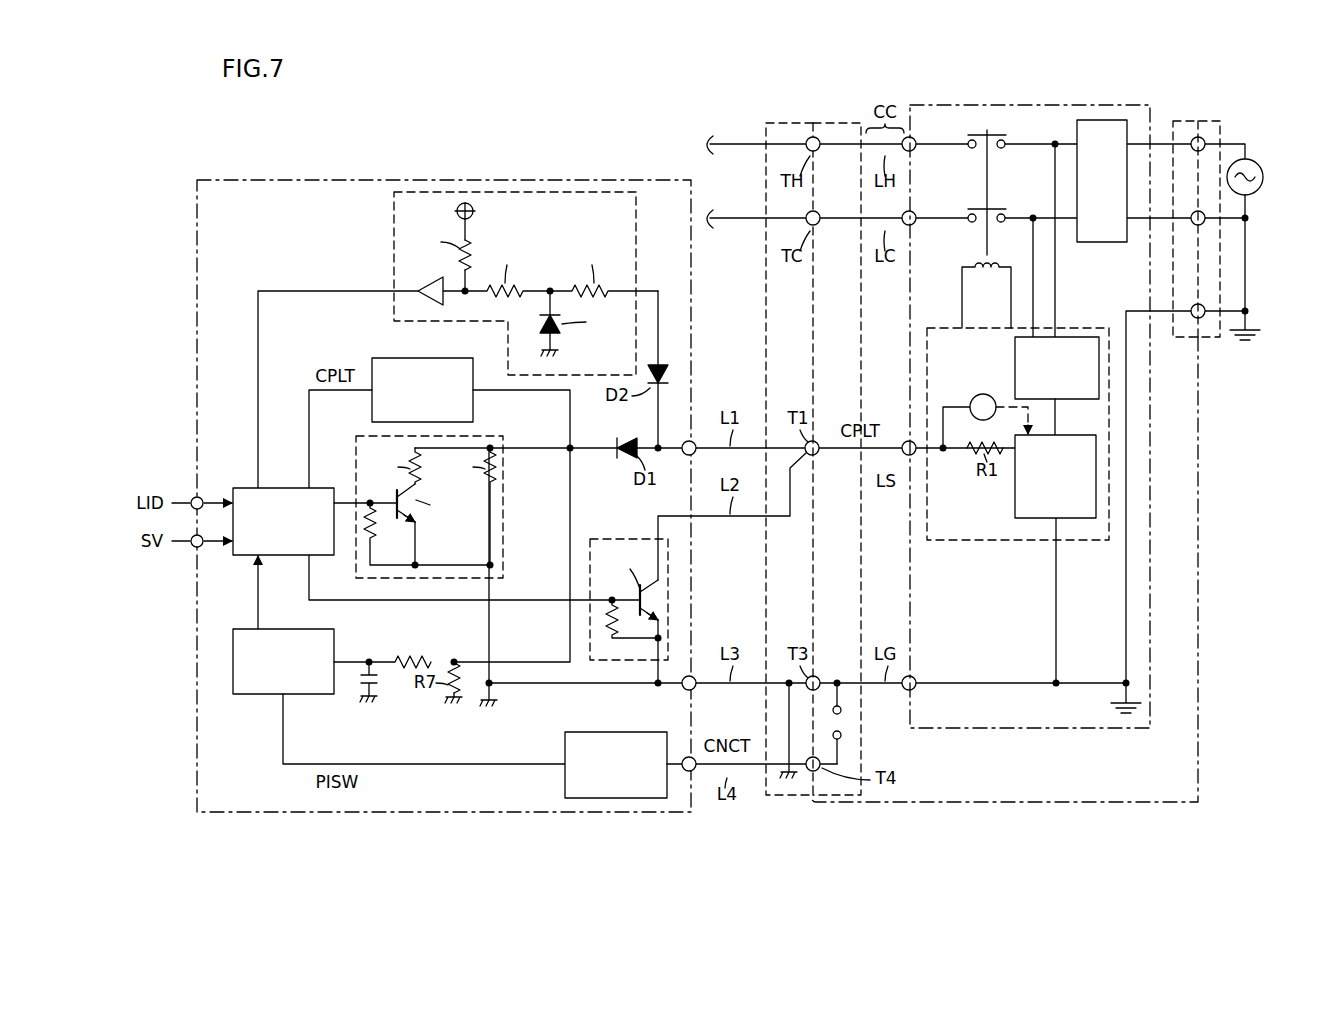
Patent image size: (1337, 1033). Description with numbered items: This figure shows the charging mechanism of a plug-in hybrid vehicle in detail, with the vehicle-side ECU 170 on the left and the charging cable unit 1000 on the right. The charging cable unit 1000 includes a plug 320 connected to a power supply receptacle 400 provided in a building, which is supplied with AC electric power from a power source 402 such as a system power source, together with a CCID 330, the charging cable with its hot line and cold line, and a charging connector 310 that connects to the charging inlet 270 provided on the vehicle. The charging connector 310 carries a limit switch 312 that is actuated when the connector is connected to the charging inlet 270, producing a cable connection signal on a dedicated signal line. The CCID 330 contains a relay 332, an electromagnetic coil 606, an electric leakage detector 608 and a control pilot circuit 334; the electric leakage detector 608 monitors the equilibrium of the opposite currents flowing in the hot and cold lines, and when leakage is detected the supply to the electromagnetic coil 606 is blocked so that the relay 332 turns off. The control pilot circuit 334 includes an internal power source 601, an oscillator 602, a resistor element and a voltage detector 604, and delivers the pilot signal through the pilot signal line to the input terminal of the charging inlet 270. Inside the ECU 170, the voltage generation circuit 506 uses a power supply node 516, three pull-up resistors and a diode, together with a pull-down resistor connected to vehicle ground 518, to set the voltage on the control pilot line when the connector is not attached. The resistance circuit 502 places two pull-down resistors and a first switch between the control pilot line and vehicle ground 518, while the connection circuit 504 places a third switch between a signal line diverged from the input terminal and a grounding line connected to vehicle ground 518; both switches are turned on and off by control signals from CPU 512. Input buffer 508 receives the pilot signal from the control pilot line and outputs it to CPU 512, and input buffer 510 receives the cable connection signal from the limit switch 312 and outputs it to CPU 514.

The ECU 170 is at (554, 178).
The power supply node 516 is at (465, 203).
The voltage generation circuit 506 is at (394, 215).
The input buffer 508 is at (425, 358).
The CPU 512 is at (283, 488).
The resistance circuit 502 is at (355, 445).
The connection circuit 504 is at (607, 539).
The CPU 514 is at (250, 696).
The vehicle ground 518 is at (453, 711).
The input buffer 510 is at (612, 732).
The limit switch 312 is at (844, 724).
The charging inlet 270 is at (785, 122).
The charging connector 310 is at (838, 122).
The CCID 330 is at (1064, 105).
The relay 332 is at (987, 126).
The electromagnetic coil 606 is at (963, 263).
The electric leakage detector 608 is at (1107, 242).
The control pilot circuit 334 is at (972, 540).
The internal power source 601 is at (1076, 336).
The oscillator 602 is at (1011, 509).
The voltage detector 604 is at (983, 394).
The plug 320 is at (1186, 121).
The power supply receptacle 400 is at (1208, 121).
The power source 402 is at (1264, 164).
The charging cable unit 1000 is at (1000, 808).